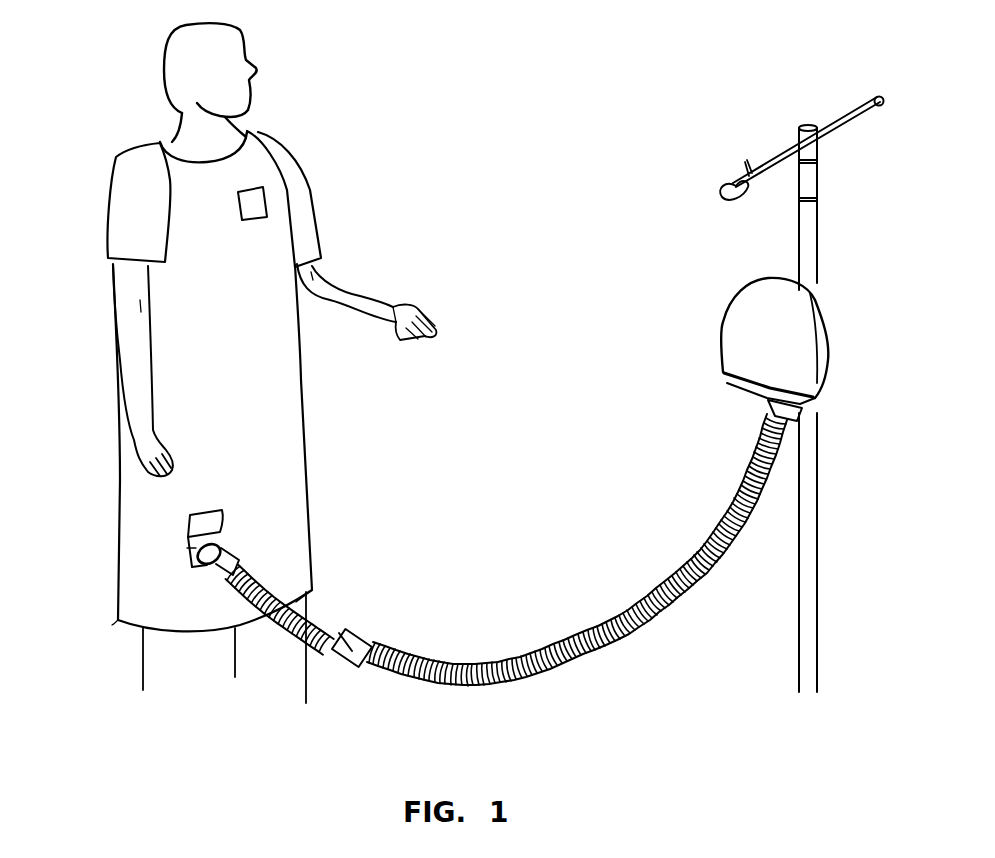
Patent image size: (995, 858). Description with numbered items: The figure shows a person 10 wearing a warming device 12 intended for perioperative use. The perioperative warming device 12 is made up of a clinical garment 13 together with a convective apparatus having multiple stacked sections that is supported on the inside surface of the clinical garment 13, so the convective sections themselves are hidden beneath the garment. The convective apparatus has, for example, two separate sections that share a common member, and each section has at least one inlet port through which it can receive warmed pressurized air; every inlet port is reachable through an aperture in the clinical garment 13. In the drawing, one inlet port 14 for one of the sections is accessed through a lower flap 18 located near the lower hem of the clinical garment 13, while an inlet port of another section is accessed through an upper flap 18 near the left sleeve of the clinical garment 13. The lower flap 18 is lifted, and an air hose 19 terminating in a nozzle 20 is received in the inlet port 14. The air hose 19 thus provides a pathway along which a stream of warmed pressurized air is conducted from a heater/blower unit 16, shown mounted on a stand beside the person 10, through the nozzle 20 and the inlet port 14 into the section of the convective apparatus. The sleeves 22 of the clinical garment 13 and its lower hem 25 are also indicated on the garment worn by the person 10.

The person 10 is at (282, 74).
The warming device 12 is at (347, 132).
The clinical garment 13 is at (162, 143).
The inlet port 14 is at (188, 548).
The heater/blower unit 16 is at (747, 327).
The flap 18 is at (210, 507).
The air hose 19 is at (402, 672).
The nozzle 20 is at (217, 562).
The sleeve 22 is at (123, 198).
The hem 25 is at (118, 622).